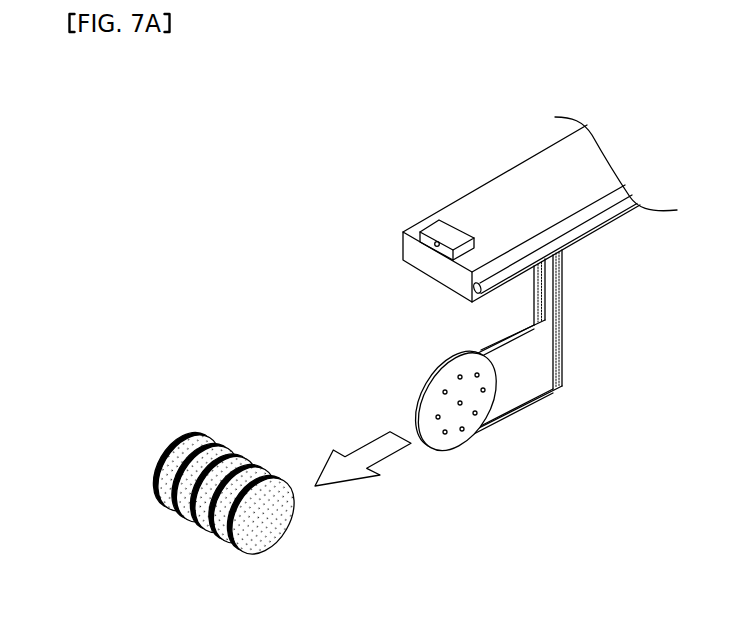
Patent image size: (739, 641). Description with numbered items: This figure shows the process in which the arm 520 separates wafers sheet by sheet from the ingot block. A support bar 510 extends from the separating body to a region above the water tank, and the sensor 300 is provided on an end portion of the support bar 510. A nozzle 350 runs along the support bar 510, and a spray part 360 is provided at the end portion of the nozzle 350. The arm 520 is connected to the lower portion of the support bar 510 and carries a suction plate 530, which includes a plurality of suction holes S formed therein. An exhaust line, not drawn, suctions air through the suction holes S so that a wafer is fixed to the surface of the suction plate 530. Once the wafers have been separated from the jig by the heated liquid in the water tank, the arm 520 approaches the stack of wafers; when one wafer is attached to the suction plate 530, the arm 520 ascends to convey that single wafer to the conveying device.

The support bar 510 is at (508, 187).
The sensor 300 is at (435, 228).
The nozzle 350 is at (590, 224).
The spray part 360 is at (466, 296).
The arm 520 is at (541, 302).
The suction plate 530 is at (453, 437).
The suction holes S is at (458, 376).
The element wafer is at (266, 528).